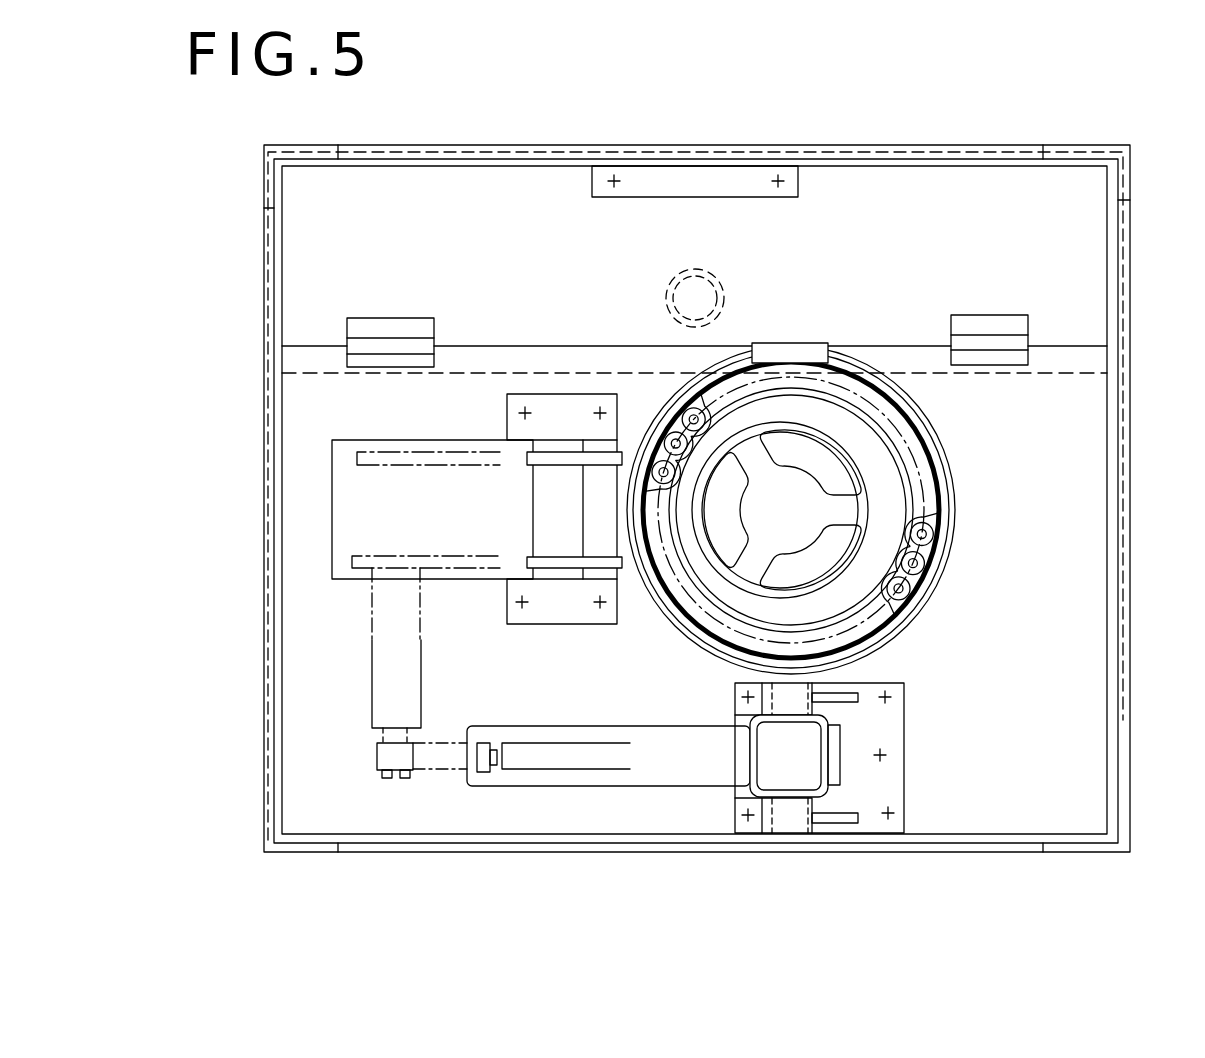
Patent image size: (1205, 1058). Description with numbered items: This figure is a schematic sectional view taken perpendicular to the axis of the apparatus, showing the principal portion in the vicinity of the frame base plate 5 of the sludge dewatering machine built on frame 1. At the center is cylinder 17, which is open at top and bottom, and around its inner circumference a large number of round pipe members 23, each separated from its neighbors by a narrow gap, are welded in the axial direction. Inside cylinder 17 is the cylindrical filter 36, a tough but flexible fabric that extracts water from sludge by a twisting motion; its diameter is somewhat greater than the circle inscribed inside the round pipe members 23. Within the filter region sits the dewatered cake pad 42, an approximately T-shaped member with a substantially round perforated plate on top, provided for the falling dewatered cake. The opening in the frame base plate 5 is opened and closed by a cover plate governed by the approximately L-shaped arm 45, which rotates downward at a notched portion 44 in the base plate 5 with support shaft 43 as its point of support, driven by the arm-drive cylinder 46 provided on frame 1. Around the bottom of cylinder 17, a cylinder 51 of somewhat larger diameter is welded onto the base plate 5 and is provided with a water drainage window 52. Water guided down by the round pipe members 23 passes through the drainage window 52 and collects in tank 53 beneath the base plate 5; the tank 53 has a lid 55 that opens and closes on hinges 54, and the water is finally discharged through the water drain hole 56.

The frame 1 is at (1088, 147).
The frame base plate 5 is at (1077, 642).
The cylinder 17 is at (935, 488).
The round pipe members 23 is at (657, 428).
The cylindrical filter 36 is at (903, 627).
The dewatered cake pad 42 is at (868, 462).
The support shaft 43 is at (543, 523).
The notched portion 44 is at (350, 513).
The arm 45 is at (562, 457).
The arm-drive cylinder 46 is at (790, 782).
The cylinder 51 is at (933, 421).
The water drainage window 52 is at (805, 340).
The tank 53 is at (987, 198).
The hinges 54 is at (350, 322).
The lid 55 is at (400, 167).
The water drain hole 56 is at (703, 270).